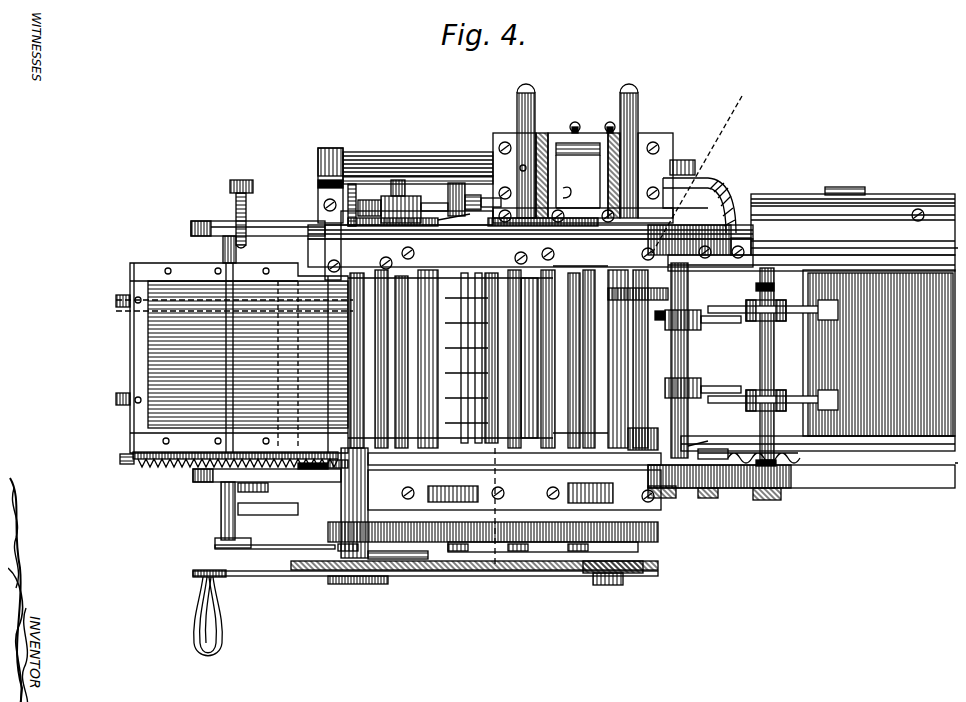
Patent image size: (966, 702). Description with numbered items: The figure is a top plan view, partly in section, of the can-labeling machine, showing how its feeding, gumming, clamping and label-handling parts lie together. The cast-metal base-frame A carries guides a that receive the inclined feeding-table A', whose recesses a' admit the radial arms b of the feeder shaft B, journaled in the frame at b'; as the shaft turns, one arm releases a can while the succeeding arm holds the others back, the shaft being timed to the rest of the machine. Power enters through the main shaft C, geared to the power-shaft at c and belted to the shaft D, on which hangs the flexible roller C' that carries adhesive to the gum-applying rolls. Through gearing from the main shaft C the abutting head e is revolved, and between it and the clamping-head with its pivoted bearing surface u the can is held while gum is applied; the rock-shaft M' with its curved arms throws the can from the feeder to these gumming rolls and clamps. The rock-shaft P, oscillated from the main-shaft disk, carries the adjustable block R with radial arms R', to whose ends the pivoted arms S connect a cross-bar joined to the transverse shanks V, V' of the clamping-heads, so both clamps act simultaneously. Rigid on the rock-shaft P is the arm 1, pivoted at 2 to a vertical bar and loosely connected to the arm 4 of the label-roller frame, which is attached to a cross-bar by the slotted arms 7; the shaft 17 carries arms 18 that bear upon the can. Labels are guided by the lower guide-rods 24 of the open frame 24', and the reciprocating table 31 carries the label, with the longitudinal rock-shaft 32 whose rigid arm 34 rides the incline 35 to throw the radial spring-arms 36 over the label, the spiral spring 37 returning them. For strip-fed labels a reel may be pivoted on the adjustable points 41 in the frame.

The adjustable points 41 is at (233, 172).
The main shaft C is at (358, 201).
The rock-shaft P is at (418, 159).
The arm 1 is at (448, 185).
The pivot 2 is at (462, 178).
The transverse shank of clamping-head U V is at (621, 157).
The transverse shank of clamping-head U' V' is at (583, 141).
The pivoted arms S is at (637, 178).
The adjustable block R is at (582, 113).
The radial arms R' is at (610, 116).
The arm 4 is at (258, 242).
The stud q is at (678, 142).
The pivoted bearing surface u is at (717, 180).
The base-frame A is at (801, 337).
The guides a is at (956, 356).
The inclined feeding-table A' is at (879, 353).
The feeder shaft B is at (774, 364).
The recesses a' is at (785, 354).
The radial arms b is at (774, 356).
The rock-shaft M' is at (690, 360).
The bearing b' is at (739, 396).
The abutting head e is at (672, 470).
The arms 18 is at (684, 502).
The slotted arms 7 is at (580, 353).
The table 31 is at (234, 358).
The radial spring-arms 36 is at (267, 364).
The spiral spring 37 is at (180, 460).
The longitudinal rock-shaft 32 is at (129, 465).
The lower guide-rods 24 is at (498, 359).
The incline 35 is at (302, 462).
The rigid arm 34 is at (328, 462).
The gearing c is at (484, 540).
The shaft D is at (559, 545).
The open frame 24' is at (504, 525).
The shaft 17 is at (540, 565).
The flexible roller C' is at (613, 579).